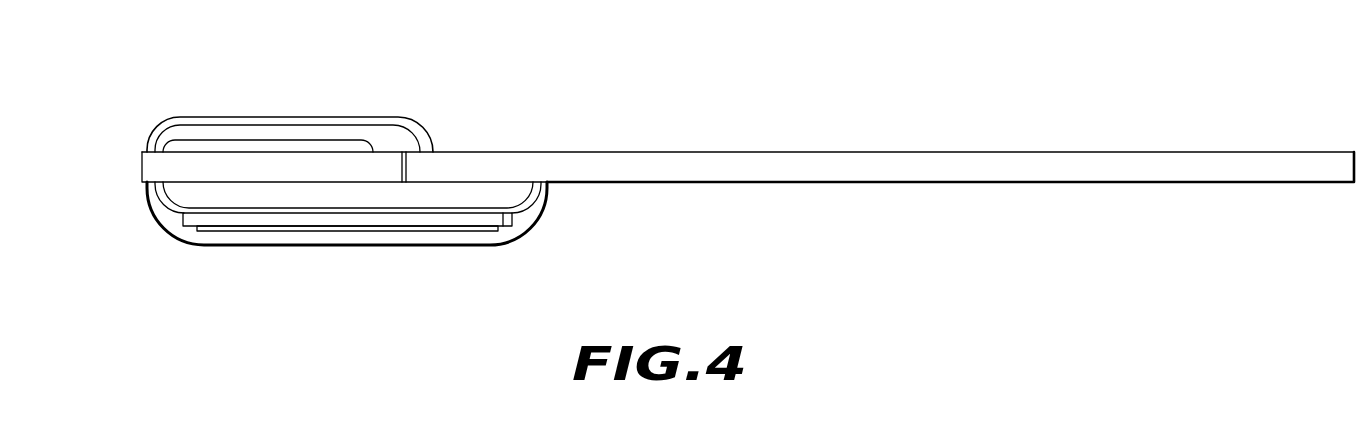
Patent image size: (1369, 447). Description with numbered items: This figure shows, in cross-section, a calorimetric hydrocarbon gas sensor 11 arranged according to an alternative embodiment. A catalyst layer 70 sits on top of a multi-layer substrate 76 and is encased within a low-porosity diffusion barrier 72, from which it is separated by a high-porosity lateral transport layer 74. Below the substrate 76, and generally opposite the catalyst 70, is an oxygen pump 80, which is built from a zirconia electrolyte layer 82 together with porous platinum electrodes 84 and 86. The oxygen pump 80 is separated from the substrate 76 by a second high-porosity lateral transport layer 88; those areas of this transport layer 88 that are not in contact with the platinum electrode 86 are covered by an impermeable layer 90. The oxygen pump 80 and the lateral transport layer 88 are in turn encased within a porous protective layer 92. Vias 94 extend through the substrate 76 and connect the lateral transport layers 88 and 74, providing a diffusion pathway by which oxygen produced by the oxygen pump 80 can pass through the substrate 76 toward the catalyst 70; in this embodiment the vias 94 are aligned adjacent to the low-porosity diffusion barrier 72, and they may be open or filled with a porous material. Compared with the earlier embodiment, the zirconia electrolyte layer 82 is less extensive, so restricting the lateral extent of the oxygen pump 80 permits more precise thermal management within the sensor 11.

The calorimetric hydrocarbon gas sensor 11 is at (221, 49).
The catalyst layer 70 is at (270, 145).
The low-porosity diffusion barrier 72 is at (336, 130).
The high-porosity lateral transport layer 74 is at (400, 130).
The multi-layer substrate 76 is at (790, 163).
The oxygen pump 80 is at (230, 222).
The zirconia electrolyte layer 82 is at (448, 219).
The porous platinum electrode 84 is at (487, 230).
The porous platinum electrode 86 is at (507, 228).
The second high-porosity lateral transport layer 88 is at (510, 190).
The impermeable layer 90 is at (167, 206).
The porous protective layer 92 is at (355, 235).
The vias 94 is at (407, 182).